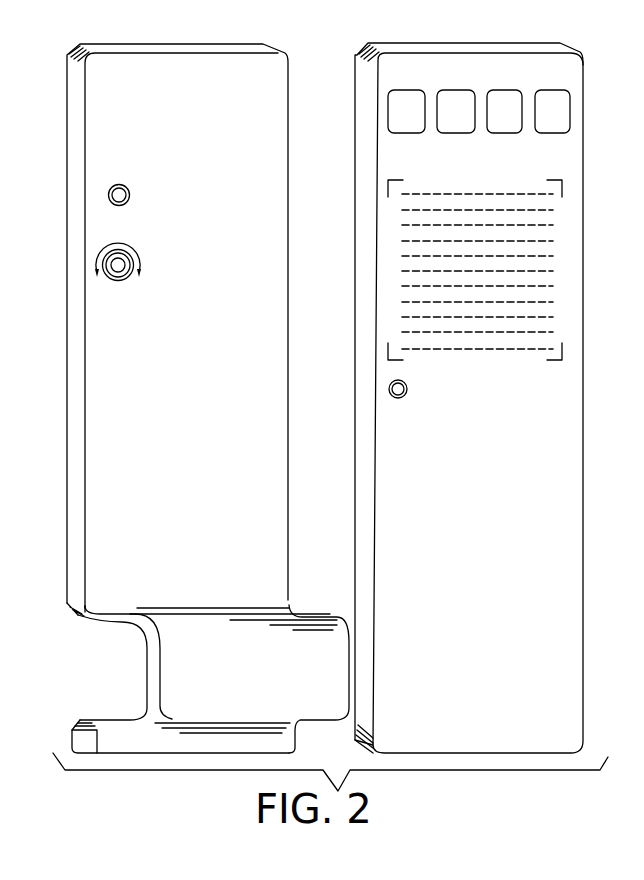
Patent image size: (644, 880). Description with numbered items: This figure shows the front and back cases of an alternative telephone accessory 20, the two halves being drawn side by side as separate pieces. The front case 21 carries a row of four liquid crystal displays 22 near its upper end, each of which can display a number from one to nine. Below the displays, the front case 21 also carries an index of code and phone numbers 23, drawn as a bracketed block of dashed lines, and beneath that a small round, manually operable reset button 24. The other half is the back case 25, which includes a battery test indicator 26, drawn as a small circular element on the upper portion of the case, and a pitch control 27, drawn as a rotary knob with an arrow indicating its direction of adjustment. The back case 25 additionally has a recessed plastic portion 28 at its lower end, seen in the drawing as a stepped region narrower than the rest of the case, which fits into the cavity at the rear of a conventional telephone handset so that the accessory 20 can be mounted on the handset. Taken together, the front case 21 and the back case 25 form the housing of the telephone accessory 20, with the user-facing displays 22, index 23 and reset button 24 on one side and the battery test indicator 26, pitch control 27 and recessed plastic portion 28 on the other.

The telephone accessory 20 is at (331, 123).
The front case 21 is at (585, 458).
The liquid crystal displays 22 is at (417, 128).
The index of code and phone numbers 23 is at (550, 237).
The manually operable reset button 24 is at (390, 394).
The back case 25 is at (80, 427).
The battery test indicator 26 is at (110, 199).
The pitch control 27 is at (118, 265).
The base foot 28 is at (147, 670).